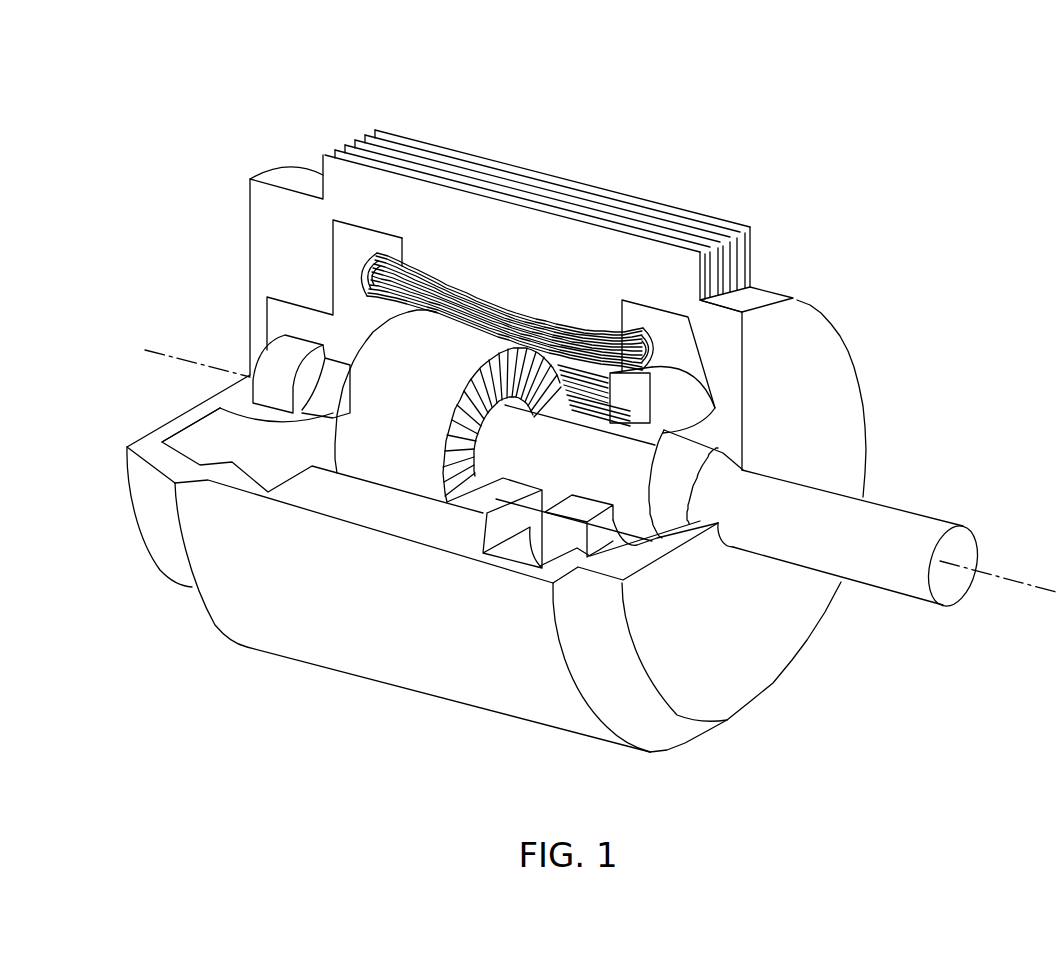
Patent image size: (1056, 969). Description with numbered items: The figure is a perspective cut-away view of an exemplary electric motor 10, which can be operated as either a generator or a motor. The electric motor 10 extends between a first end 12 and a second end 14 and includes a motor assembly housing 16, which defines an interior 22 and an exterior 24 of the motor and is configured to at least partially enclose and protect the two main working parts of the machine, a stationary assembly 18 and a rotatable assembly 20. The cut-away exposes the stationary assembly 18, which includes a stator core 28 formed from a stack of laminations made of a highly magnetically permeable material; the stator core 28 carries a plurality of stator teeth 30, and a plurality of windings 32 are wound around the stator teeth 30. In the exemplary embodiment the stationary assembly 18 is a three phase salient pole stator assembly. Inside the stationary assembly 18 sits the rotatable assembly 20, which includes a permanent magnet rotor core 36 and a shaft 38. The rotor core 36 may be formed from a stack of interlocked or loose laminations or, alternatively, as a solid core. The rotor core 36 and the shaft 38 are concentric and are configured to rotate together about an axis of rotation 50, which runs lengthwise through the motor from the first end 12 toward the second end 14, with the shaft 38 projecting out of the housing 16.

The electric motor 10 is at (827, 163).
The first end 12 is at (178, 115).
The second end 14 is at (935, 248).
The motor assembly housing 16 is at (722, 223).
The stationary assembly 18 is at (450, 290).
The rotatable assembly 20 is at (383, 453).
The interior 22 is at (305, 288).
The exterior 24 is at (295, 153).
The stator core 28 is at (532, 317).
The stator teeth 30 is at (624, 301).
The windings 32 is at (561, 330).
The permanent magnet rotor core 36 is at (457, 500).
The shaft 38 is at (955, 522).
The axis of rotation 50 is at (1010, 566).